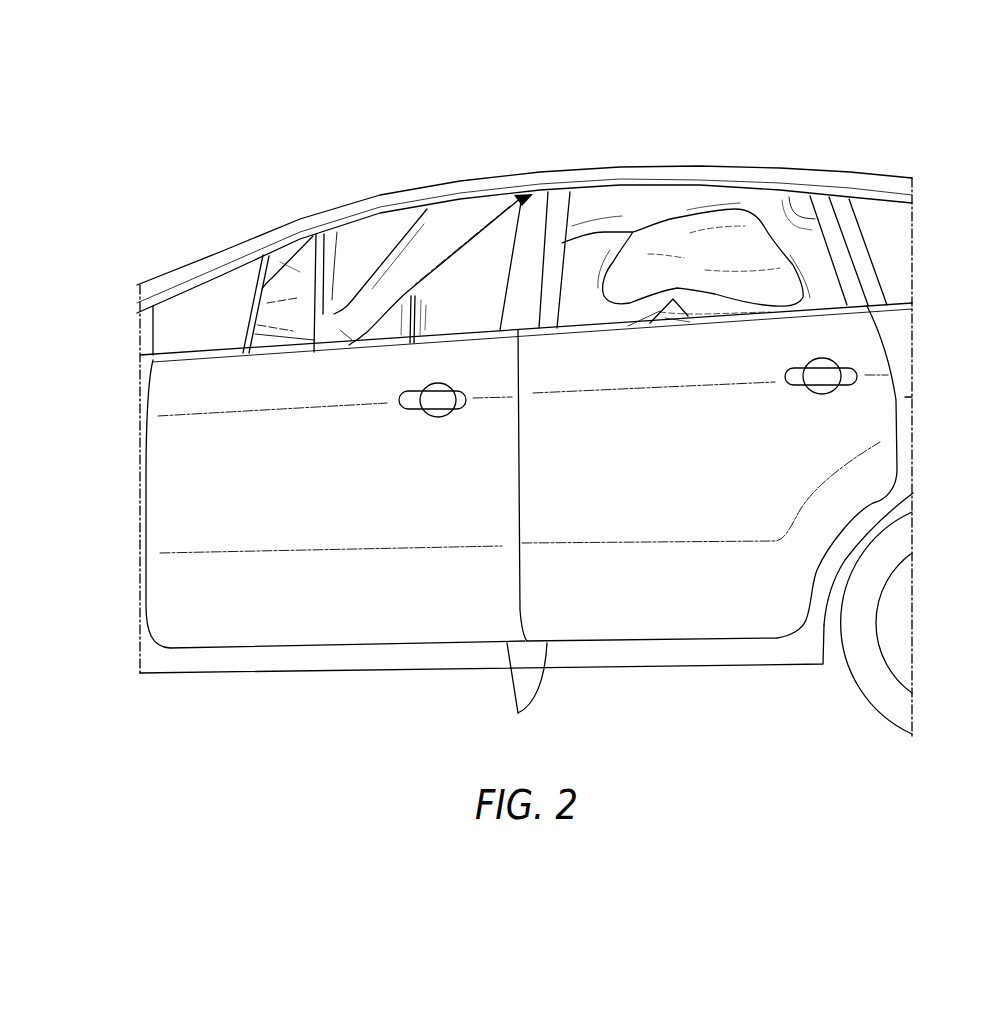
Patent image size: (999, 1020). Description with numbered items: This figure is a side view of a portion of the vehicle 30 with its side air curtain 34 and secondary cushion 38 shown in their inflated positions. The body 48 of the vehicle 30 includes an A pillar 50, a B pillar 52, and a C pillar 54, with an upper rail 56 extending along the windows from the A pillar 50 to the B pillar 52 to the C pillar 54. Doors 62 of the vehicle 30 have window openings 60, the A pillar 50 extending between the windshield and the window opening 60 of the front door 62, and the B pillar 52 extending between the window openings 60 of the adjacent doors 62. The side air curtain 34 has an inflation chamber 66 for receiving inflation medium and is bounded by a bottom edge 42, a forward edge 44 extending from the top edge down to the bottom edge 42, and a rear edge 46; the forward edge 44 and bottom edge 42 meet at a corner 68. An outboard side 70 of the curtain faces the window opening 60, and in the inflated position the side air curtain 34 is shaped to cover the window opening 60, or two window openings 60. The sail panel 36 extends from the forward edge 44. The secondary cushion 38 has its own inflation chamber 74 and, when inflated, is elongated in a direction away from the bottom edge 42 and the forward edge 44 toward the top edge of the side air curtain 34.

The vehicle 30 is at (146, 125).
The side air curtain 34 is at (688, 202).
The sail panel 36 is at (283, 272).
The secondary cushion 38 is at (402, 240).
The bottom edge 42 is at (685, 313).
The forward edge 44 is at (314, 234).
The rear edge 46 is at (838, 267).
The body 48 is at (202, 673).
The A pillar 50 is at (167, 273).
The B pillar 52 is at (518, 228).
The C pillar 54 is at (865, 227).
The upper rail 56 is at (580, 168).
The window opening 60 is at (377, 347).
The door 62 is at (517, 715).
The inflation chamber 66 is at (460, 300).
The corner 68 is at (316, 336).
The outboard side 70 is at (443, 303).
The inflation chamber 74 is at (338, 347).